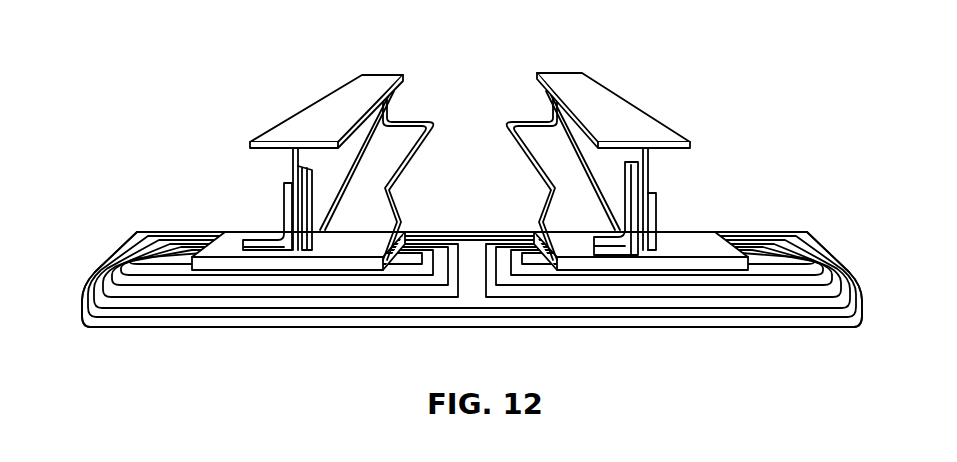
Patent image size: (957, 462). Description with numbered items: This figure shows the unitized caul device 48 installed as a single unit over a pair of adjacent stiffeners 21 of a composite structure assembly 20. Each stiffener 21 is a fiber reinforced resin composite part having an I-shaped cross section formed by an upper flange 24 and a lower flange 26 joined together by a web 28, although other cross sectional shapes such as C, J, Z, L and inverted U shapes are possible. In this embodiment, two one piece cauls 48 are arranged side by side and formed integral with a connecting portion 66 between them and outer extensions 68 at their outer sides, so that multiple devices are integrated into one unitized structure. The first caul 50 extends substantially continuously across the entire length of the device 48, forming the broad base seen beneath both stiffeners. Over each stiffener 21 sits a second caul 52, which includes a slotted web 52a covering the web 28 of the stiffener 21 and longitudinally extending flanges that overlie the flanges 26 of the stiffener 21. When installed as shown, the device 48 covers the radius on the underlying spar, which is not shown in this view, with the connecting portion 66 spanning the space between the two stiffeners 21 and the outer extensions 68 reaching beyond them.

The composite structure assembly 20 is at (834, 204).
The stiffener 21 is at (292, 88).
The upper flange 24 is at (283, 137).
The lower flange 26 is at (557, 161).
The web 28 is at (293, 166).
The one piece caul 48 is at (446, 240).
The first caul 50 is at (273, 313).
The second caul 52 is at (349, 241).
The slotted web 52a is at (289, 212).
The connecting portion 66 is at (455, 243).
The outer extensions 68 is at (133, 245).